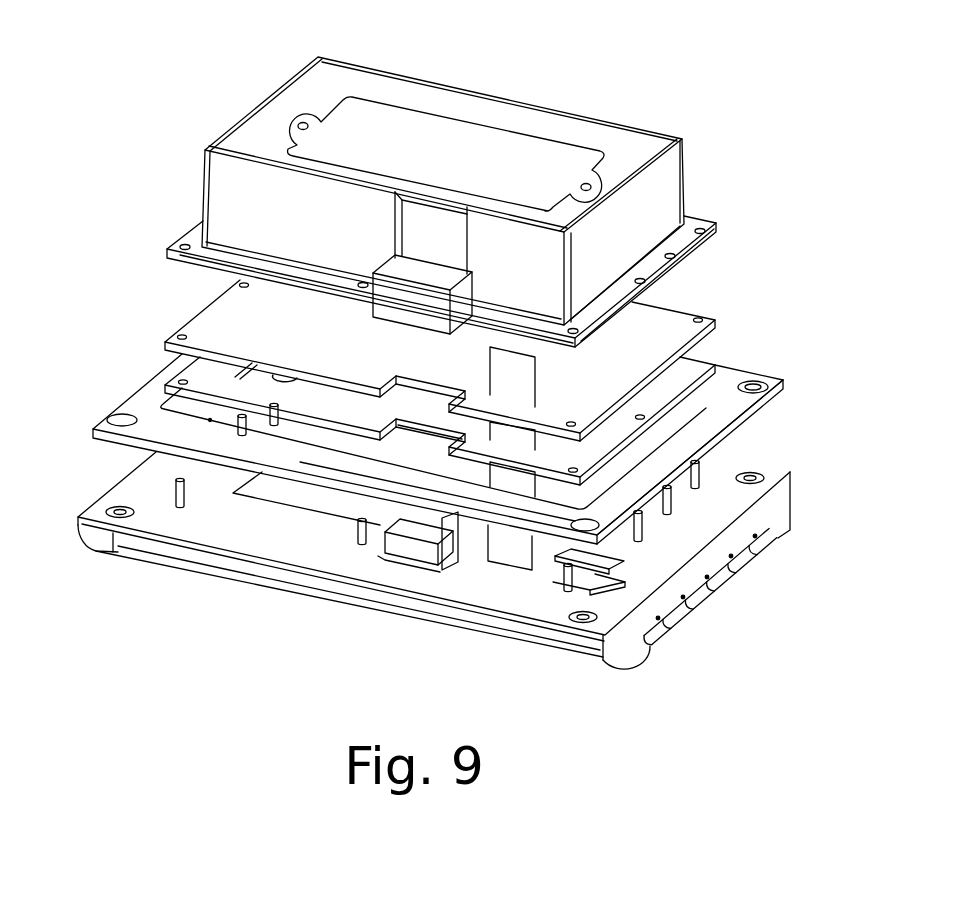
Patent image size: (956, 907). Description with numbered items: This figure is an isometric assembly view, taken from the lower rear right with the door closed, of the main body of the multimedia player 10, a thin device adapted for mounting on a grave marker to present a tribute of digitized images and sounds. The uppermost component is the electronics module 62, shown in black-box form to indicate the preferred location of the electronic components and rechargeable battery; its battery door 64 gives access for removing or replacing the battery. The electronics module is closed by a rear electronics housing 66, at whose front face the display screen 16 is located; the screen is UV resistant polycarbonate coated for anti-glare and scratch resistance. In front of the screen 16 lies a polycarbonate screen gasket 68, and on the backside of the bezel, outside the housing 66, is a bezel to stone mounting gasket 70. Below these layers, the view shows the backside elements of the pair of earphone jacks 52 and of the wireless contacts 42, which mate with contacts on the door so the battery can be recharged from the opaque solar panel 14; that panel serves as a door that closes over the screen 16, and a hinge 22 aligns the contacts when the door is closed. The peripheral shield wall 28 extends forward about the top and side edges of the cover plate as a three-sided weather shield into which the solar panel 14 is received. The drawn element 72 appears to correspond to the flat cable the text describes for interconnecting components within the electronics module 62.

The multimedia player 10 is at (122, 121).
The solar panel 14 is at (228, 570).
The display screen 16 is at (177, 333).
The hinge 22 is at (718, 597).
The peripheral shield wall 28 is at (100, 552).
The first pair of contacts 42 is at (557, 563).
The earphone jacks 52 is at (407, 550).
The electronics module 62 is at (687, 200).
The battery door 64 is at (462, 140).
The rear electronics housing 66 is at (612, 133).
The screen gasket 68 is at (707, 367).
The bezel to stone mounting gasket 70 is at (135, 398).
The flexible cable 72 is at (503, 553).